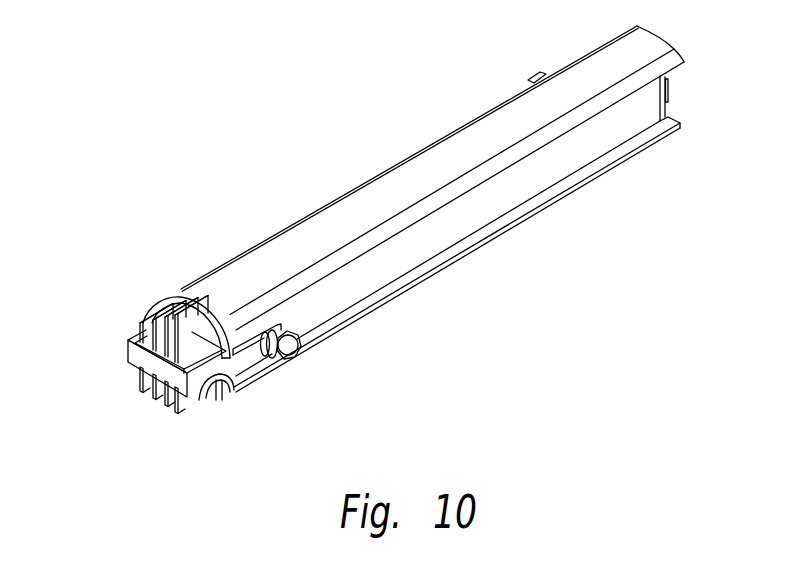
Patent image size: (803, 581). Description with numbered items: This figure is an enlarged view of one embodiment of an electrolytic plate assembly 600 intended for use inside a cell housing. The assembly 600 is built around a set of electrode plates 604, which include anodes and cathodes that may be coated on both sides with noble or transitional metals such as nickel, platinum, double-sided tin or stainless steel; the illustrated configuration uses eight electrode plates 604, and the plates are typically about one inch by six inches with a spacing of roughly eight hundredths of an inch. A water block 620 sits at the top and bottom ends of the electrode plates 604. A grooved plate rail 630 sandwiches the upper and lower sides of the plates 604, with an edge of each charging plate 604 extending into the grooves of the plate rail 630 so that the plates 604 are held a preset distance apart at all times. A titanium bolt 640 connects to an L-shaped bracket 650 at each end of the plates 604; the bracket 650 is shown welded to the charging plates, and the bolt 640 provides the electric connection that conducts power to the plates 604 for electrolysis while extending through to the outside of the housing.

The electrolytic plate assembly 600 is at (270, 98).
The electrode plates 604 is at (141, 383).
The water block 620 is at (174, 298).
The grooved plate rail 630 is at (389, 190).
The titanium bolt 640 is at (533, 80).
The L-shaped bracket 650 is at (130, 352).